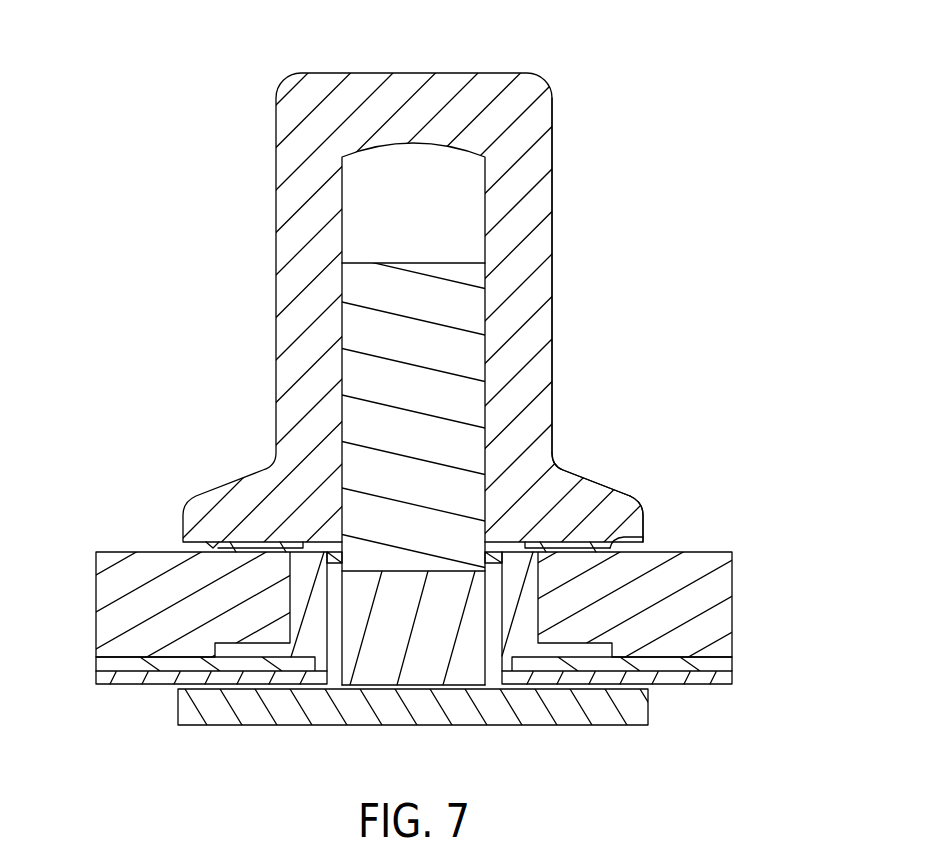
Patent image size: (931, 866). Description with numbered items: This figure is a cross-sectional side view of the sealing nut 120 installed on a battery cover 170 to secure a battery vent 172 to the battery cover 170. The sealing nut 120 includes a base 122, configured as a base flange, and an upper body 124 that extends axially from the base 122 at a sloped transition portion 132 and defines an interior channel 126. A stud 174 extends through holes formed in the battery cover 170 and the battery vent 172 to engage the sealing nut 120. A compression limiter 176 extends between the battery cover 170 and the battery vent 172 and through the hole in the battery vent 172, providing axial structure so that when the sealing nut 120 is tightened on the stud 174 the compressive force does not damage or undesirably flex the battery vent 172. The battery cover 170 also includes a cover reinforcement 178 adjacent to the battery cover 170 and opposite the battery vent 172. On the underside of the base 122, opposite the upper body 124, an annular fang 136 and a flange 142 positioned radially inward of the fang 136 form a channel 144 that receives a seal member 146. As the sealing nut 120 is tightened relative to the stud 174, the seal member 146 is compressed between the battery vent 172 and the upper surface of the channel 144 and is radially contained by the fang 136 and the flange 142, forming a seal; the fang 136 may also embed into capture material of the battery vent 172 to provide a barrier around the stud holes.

The sealing nut 120 is at (275, 53).
The interior channel 126 is at (405, 177).
The upper body 124 is at (553, 185).
The stud 174 is at (355, 322).
The transition portion 132 is at (578, 443).
The flange 142 is at (517, 547).
The base 122 is at (647, 520).
The fang 136 is at (613, 548).
The channel 144 is at (252, 538).
The seal member 146 is at (235, 547).
The battery vent 172 is at (115, 578).
The cover reinforcement 178 is at (98, 676).
The compression limiter 176 is at (315, 647).
The battery cover 170 is at (723, 663).